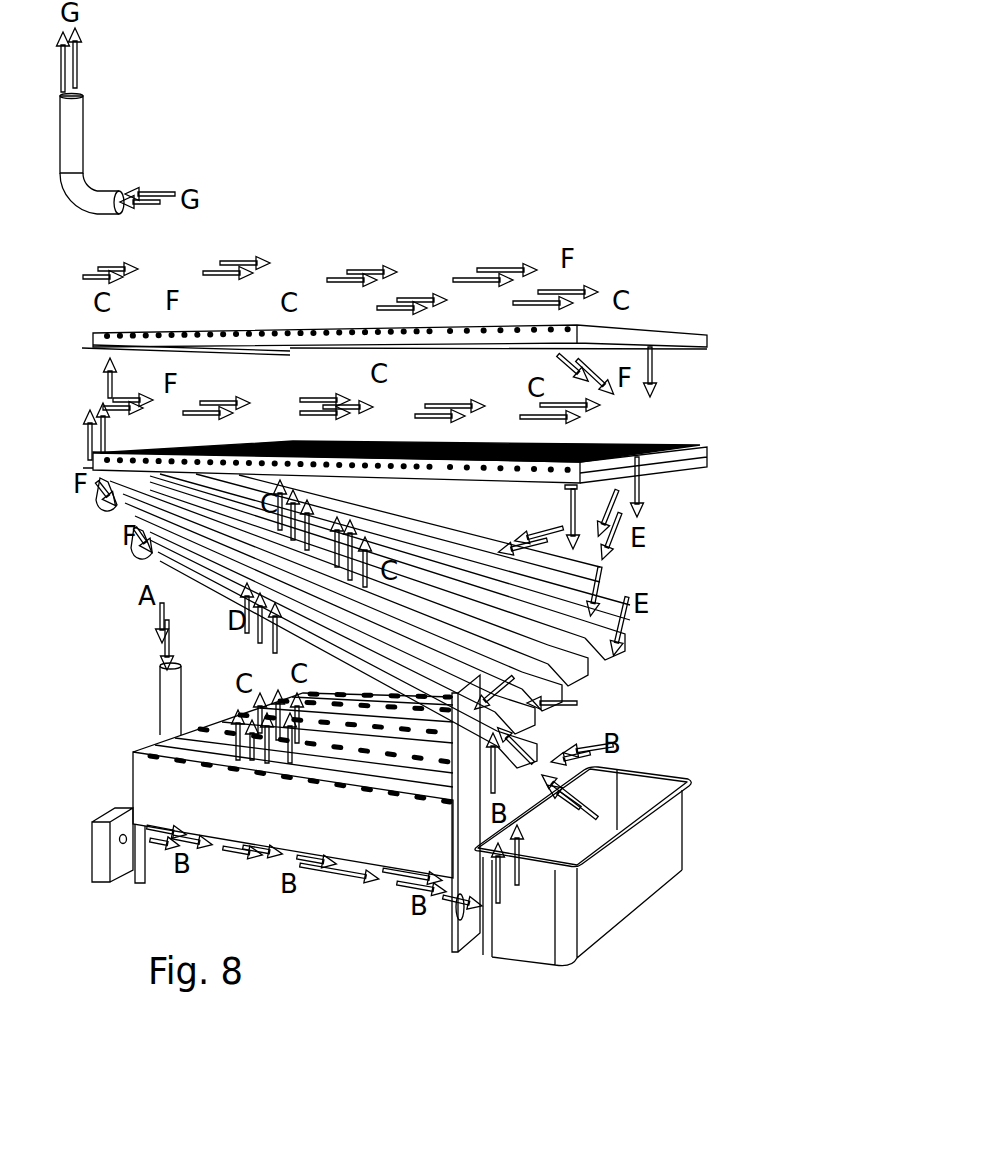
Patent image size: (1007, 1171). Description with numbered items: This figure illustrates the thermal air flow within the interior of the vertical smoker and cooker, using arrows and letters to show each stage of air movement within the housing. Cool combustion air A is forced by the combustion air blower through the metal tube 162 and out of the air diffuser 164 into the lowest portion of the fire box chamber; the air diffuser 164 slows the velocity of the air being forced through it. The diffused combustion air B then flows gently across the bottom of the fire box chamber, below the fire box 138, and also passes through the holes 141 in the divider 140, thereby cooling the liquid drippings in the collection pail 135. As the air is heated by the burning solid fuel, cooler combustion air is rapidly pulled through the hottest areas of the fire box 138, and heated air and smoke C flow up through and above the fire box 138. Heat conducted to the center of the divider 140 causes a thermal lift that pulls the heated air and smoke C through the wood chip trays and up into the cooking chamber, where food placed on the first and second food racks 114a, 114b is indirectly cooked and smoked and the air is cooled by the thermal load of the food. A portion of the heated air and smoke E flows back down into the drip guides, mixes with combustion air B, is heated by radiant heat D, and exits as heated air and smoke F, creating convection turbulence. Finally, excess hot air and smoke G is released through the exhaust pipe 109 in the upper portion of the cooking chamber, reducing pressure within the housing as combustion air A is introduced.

The exhaust pipe 109 is at (77, 104).
The second food rack 114b is at (710, 335).
The first food rack 114a is at (707, 455).
The metal tube 162 is at (160, 692).
The fire box 138 is at (140, 786).
The air diffuser 164 is at (124, 843).
The holes 141 is at (452, 908).
The divider 140 is at (455, 945).
The collection pail 135 is at (623, 896).